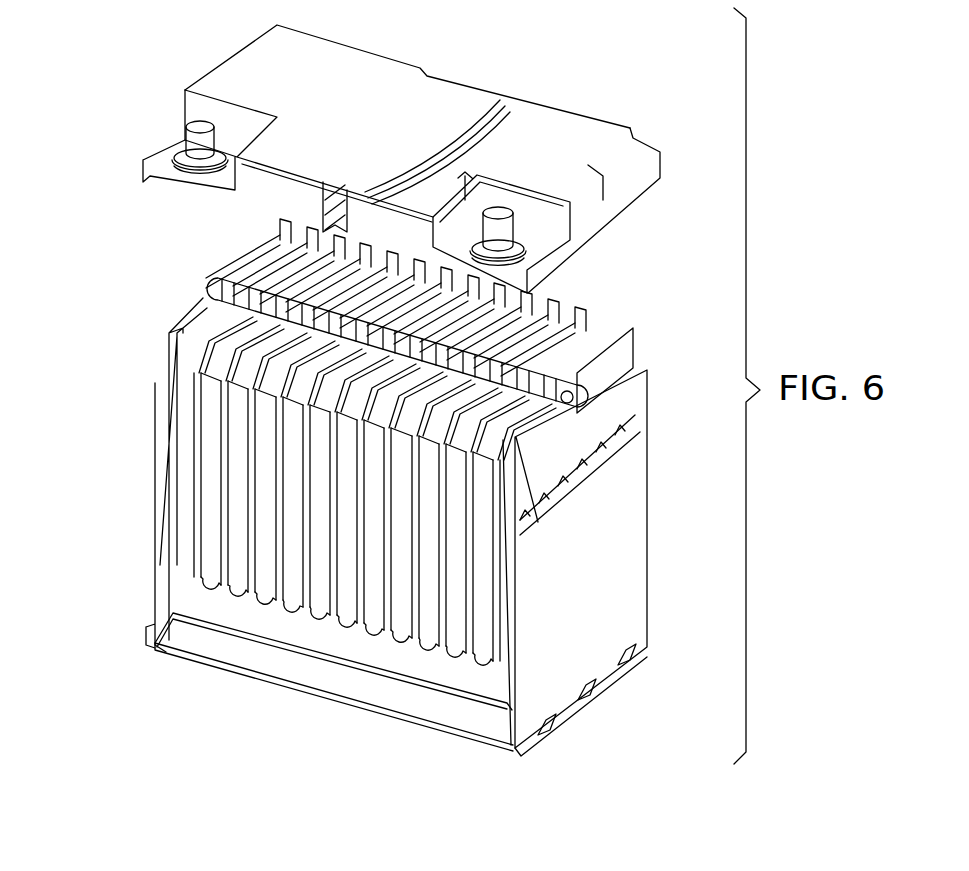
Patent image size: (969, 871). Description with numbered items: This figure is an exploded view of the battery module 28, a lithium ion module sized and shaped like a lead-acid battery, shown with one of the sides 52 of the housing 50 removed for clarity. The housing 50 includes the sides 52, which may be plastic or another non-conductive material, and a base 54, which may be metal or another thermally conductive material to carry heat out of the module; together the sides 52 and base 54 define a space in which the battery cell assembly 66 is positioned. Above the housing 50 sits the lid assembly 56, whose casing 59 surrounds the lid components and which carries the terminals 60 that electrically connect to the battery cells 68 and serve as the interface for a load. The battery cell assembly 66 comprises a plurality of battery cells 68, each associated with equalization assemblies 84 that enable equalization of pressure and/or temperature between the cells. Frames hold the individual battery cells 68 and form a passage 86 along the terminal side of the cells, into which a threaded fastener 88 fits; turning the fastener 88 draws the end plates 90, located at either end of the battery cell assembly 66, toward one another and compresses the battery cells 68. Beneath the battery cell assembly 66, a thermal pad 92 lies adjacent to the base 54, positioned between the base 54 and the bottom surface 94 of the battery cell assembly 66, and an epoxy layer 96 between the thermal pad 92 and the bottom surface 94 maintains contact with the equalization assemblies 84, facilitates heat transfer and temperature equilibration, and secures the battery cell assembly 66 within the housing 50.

The battery module 28 is at (100, 127).
The housing 50 is at (656, 548).
The sides 52 is at (628, 515).
The base 54 is at (403, 720).
The lid assembly 56 is at (545, 130).
The casing 59 is at (340, 76).
The terminals 60 is at (200, 145).
The battery cell assembly 66 is at (155, 307).
The battery cells 68 is at (268, 498).
The equalization assemblies 84 is at (297, 228).
The passage 86 is at (192, 283).
The fastener 88 is at (580, 394).
The end plates 90 is at (160, 350).
The thermal pad 92 is at (228, 638).
The bottom surface 94 is at (312, 616).
The epoxy layer 96 is at (212, 610).